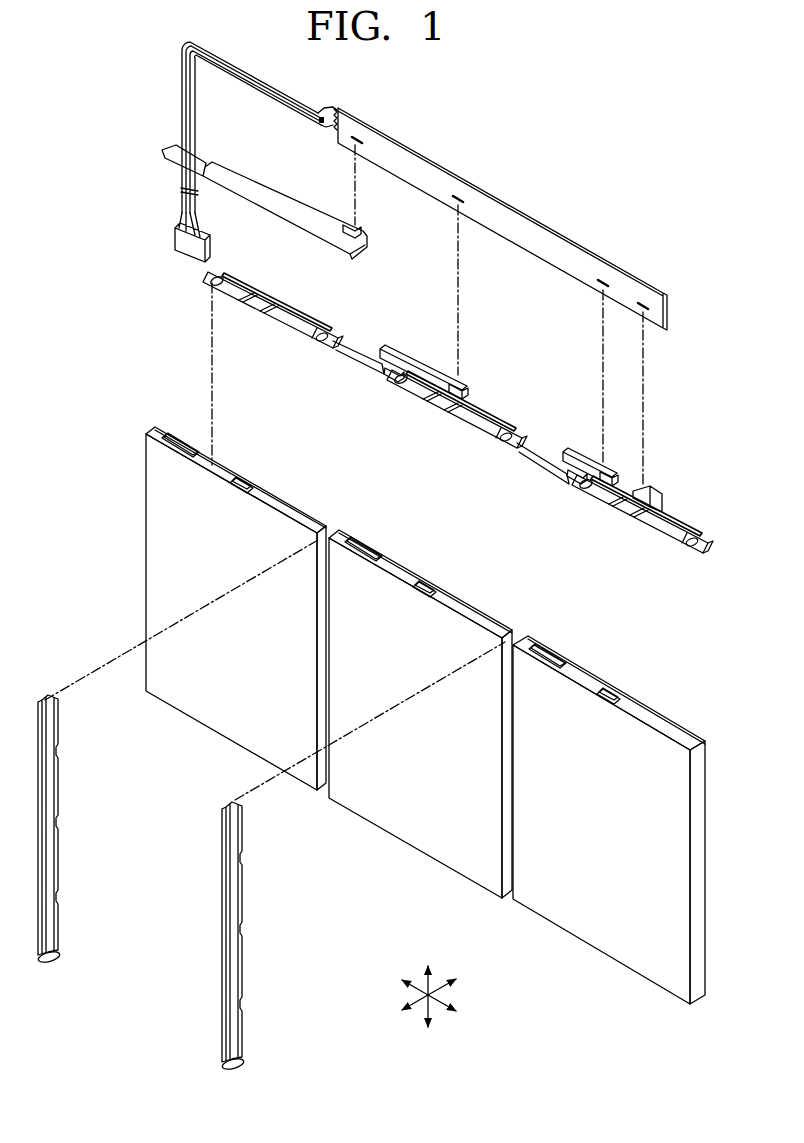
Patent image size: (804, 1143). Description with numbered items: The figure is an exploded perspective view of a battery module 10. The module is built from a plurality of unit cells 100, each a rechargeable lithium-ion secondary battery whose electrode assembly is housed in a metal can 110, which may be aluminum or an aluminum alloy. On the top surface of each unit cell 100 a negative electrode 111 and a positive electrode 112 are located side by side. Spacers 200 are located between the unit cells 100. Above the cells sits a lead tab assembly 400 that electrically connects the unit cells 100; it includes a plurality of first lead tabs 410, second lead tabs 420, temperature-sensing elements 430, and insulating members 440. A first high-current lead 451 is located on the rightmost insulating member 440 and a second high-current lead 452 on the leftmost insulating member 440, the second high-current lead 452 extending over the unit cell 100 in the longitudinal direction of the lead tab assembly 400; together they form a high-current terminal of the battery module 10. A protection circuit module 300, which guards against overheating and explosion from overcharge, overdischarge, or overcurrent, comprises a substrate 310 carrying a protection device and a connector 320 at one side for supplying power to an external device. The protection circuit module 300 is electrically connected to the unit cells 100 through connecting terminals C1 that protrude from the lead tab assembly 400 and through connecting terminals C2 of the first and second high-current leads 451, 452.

The battery module 10 is at (637, 150).
The unit cell 100 is at (394, 715).
The can 110 is at (143, 580).
The negative electrode 111 is at (242, 472).
The positive electrode 112 is at (180, 440).
The spacer 200 is at (55, 878).
The protection circuit module 300 is at (418, 186).
The substrate 310 is at (664, 310).
The connector 320 is at (174, 238).
The lead tab assembly 400 is at (448, 365).
The first lead tab 410 is at (233, 290).
The second lead tab 420 is at (305, 325).
The temperature-sensing element 430 is at (260, 305).
The insulating member 440 is at (323, 327).
The first high-current lead 451 is at (664, 530).
The second high-current lead 452 is at (273, 197).
The connecting terminal C1 is at (462, 386).
The connecting terminal C2 is at (358, 230).